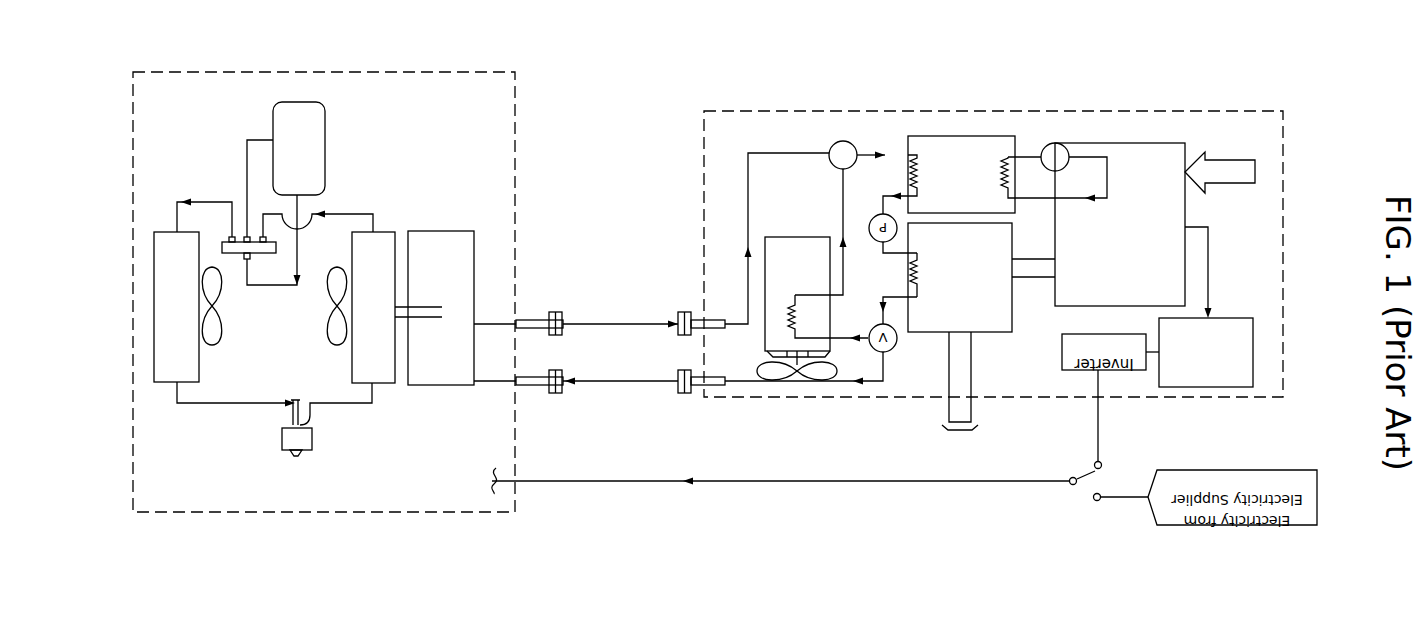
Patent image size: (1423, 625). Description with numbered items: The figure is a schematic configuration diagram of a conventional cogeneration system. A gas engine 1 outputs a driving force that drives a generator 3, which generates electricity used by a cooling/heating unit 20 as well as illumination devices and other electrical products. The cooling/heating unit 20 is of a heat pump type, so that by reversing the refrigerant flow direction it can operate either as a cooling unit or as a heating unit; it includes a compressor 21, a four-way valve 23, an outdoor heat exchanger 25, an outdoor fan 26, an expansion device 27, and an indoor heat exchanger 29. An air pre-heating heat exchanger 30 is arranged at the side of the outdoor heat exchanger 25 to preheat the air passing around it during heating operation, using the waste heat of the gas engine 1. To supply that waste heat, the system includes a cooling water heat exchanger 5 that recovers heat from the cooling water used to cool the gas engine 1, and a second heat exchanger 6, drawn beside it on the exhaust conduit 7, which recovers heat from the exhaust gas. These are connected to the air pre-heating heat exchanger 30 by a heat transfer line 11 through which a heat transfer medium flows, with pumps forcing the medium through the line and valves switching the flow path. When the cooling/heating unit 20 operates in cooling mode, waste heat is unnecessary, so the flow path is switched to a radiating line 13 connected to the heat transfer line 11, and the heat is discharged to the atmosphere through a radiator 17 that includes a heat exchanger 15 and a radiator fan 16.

The gas engine 1 is at (1172, 253).
The generator 3 is at (1245, 365).
The cooling water heat exchanger 5 is at (937, 143).
The cooling water heat exchanger 6 is at (988, 243).
The exhaust conduit 7 is at (962, 368).
The heat transfer line 11 is at (748, 203).
The radiating line 13 is at (843, 197).
The heat exchanger 15 is at (797, 360).
The radiator fan 16 is at (822, 372).
The radiator 17 is at (810, 399).
The cooling/heating unit 20 is at (153, 527).
The compressor 21 is at (305, 115).
The four-way valve 23 is at (242, 247).
The outdoor heat exchanger 25 is at (385, 247).
The outdoor fan 26 is at (337, 270).
The expansion device 27 is at (310, 437).
The indoor heat exchanger 29 is at (160, 306).
The air pre-heating heat exchanger 30 is at (445, 252).